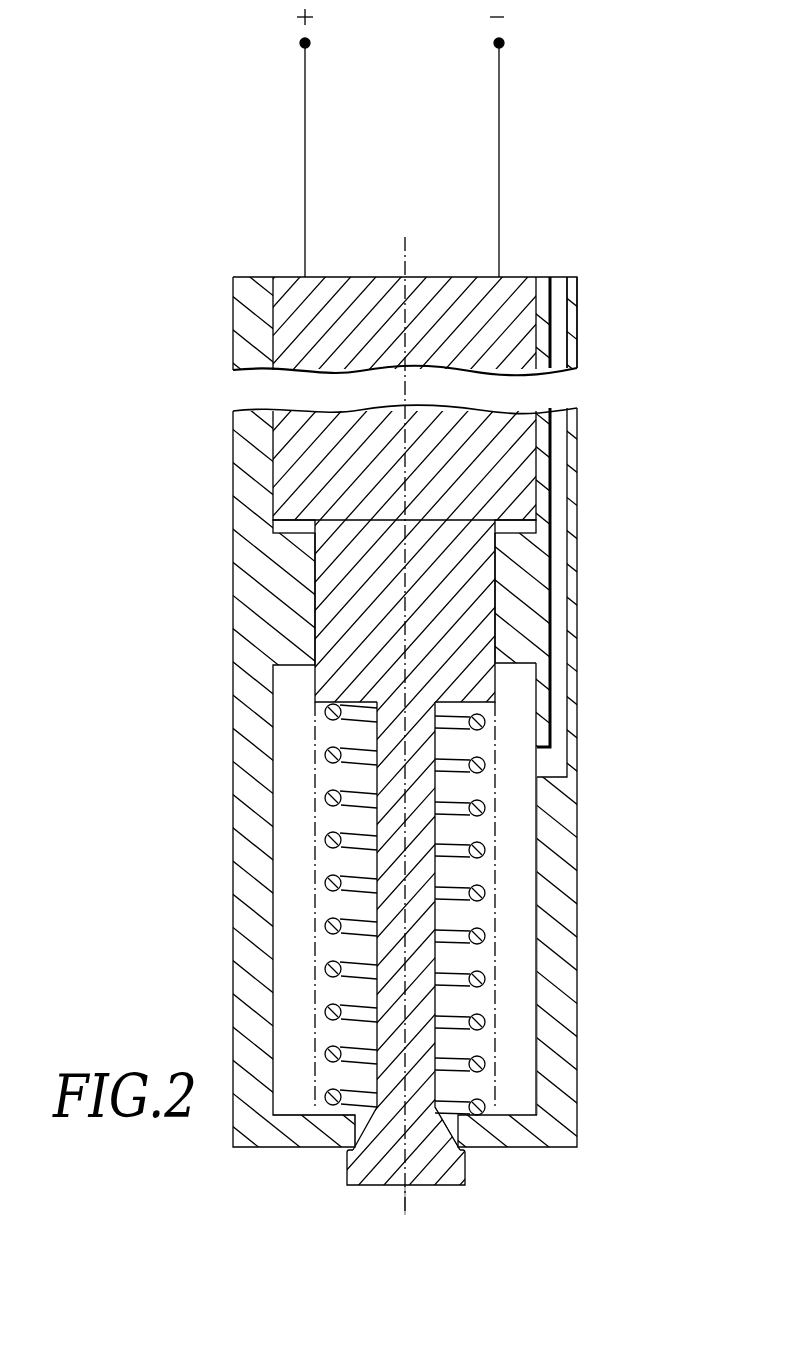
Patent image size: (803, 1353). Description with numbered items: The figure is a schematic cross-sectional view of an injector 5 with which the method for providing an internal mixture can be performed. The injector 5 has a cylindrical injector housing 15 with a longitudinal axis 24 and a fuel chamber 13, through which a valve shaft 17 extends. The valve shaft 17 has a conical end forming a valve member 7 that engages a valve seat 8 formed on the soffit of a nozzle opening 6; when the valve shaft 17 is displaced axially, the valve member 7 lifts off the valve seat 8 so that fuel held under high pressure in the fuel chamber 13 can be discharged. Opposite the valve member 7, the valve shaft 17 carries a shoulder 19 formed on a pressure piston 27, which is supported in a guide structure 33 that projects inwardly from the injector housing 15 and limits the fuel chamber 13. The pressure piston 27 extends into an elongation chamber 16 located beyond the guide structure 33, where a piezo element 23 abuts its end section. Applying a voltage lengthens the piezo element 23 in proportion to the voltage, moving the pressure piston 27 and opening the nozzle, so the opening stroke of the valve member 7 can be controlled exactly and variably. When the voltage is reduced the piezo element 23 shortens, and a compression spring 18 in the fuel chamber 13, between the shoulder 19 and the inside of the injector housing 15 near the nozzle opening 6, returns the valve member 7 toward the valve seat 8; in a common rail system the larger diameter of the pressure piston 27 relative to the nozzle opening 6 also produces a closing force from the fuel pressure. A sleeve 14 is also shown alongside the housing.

The injector 5 is at (205, 165).
The nozzle opening 6 is at (345, 1122).
The valve member 7 is at (383, 1165).
The valve seat 8 is at (487, 1165).
The fuel chamber 13 is at (527, 905).
The sleeve 14 is at (557, 720).
The injector housing 15 is at (563, 1015).
The elongation chamber 16 is at (273, 533).
The valve shaft 17 is at (385, 908).
The compression spring 18 is at (360, 882).
The shoulder 19 is at (358, 714).
The piezo element 23 is at (497, 424).
The longitudinal axis 24 is at (423, 1212).
The pressure piston 27 is at (367, 628).
The guide structure 33 is at (535, 588).